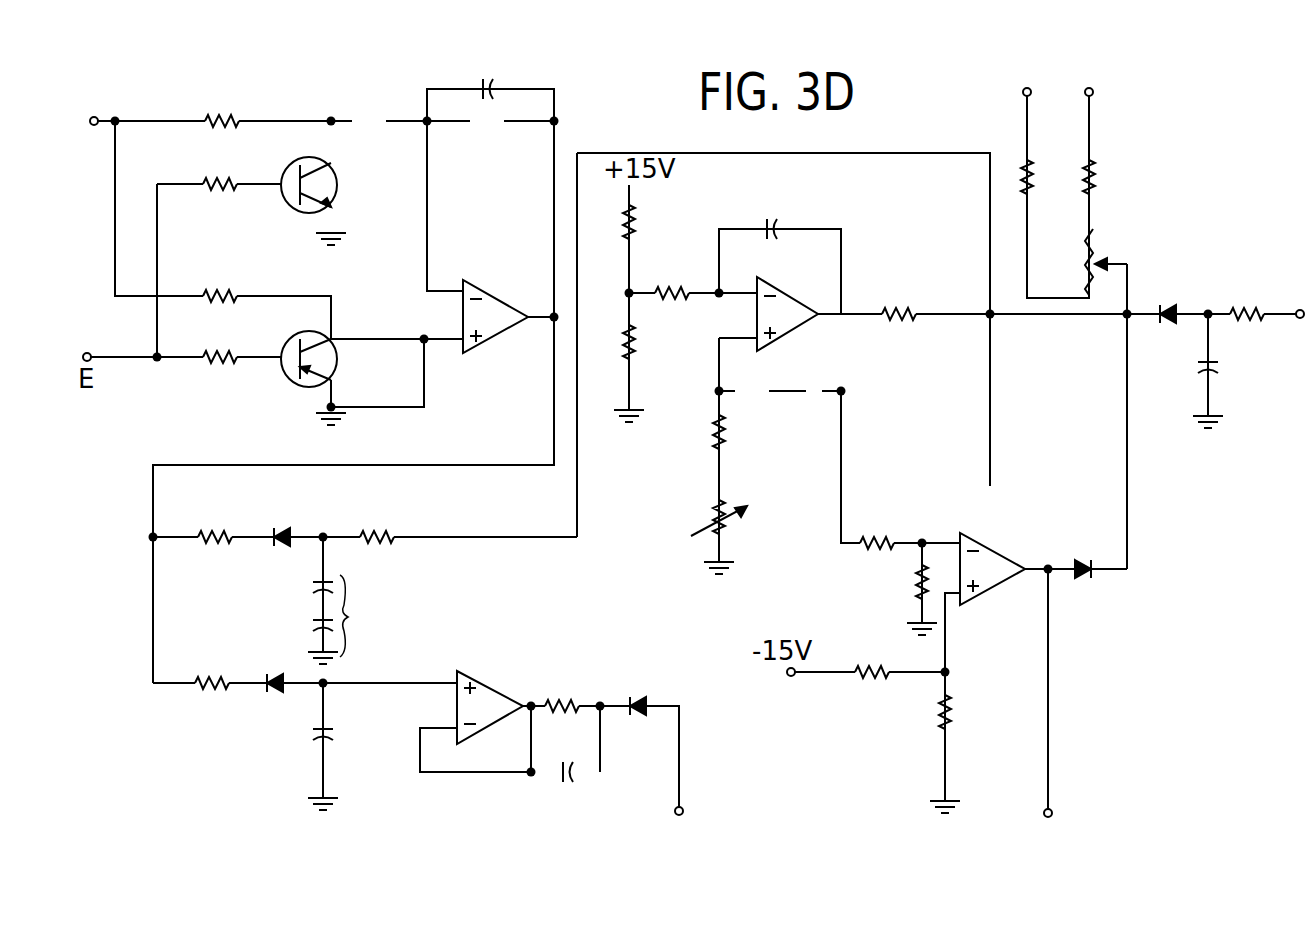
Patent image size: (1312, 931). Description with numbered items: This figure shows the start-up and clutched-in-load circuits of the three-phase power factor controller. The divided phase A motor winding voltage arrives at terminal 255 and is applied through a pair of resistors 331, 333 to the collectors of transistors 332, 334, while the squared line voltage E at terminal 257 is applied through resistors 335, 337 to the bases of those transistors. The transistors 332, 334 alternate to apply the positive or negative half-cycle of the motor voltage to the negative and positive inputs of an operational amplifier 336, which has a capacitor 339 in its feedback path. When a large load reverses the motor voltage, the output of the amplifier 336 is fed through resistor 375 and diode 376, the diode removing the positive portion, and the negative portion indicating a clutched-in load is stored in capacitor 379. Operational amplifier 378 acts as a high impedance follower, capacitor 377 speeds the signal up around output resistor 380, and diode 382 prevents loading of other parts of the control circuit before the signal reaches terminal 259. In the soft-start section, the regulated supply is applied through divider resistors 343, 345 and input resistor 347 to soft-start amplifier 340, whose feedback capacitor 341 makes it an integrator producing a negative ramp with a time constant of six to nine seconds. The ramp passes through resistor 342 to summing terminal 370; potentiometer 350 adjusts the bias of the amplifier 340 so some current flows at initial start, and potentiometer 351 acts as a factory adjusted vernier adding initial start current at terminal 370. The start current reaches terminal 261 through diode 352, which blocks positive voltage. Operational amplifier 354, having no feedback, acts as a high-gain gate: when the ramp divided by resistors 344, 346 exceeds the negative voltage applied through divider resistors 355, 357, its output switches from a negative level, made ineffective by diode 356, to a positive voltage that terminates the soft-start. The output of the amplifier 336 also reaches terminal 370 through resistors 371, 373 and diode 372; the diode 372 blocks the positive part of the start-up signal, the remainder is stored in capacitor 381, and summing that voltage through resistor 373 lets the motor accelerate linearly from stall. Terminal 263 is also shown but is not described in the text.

The terminal 255 is at (95, 118).
The terminal 257 is at (87, 353).
The terminal 259 is at (683, 815).
The terminal 261 is at (1300, 318).
The output terminal 263 is at (1053, 815).
The resistor 331 is at (226, 118).
The transistor 332 is at (337, 183).
The resistor 333 is at (220, 294).
The transistor 334 is at (292, 378).
The resistor 335 is at (206, 184).
The operational amplifier 336 is at (478, 290).
The resistor 337 is at (220, 355).
The capacitor 339 is at (493, 92).
The soft-start amplifier 340 is at (766, 278).
The feedback capacitor 341 is at (771, 228).
The resistor 342 is at (900, 318).
The divider resistor 343 is at (633, 224).
The resistor 344 is at (868, 540).
The divider resistor 345 is at (638, 332).
The resistor 346 is at (916, 578).
The input resistor 347 is at (651, 294).
The potentiometer 350 is at (730, 520).
The potentiometer 351 is at (1094, 264).
The diode 352 is at (1164, 310).
The operational amplifier 354 is at (983, 608).
The divider resistor 355 is at (854, 678).
The diode 356 is at (1080, 565).
The divider resistor 357 is at (955, 720).
The summing terminal 370 is at (1044, 318).
The resistor 371 is at (218, 542).
The diode 372 is at (282, 530).
The resistor 373 is at (383, 536).
The resistor 375 is at (206, 682).
The diode 376 is at (273, 694).
The capacitor 377 is at (575, 780).
The operational amplifier 378 is at (464, 670).
The capacitor 379 is at (316, 740).
The output resistor 380 is at (563, 698).
The capacitor 381 is at (362, 606).
The diode 382 is at (637, 704).